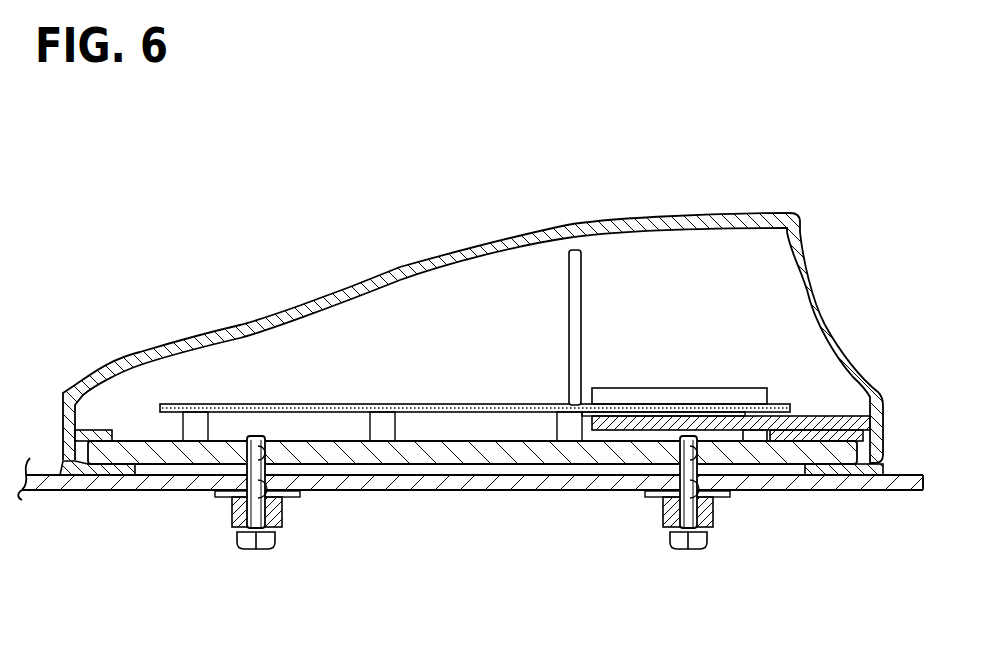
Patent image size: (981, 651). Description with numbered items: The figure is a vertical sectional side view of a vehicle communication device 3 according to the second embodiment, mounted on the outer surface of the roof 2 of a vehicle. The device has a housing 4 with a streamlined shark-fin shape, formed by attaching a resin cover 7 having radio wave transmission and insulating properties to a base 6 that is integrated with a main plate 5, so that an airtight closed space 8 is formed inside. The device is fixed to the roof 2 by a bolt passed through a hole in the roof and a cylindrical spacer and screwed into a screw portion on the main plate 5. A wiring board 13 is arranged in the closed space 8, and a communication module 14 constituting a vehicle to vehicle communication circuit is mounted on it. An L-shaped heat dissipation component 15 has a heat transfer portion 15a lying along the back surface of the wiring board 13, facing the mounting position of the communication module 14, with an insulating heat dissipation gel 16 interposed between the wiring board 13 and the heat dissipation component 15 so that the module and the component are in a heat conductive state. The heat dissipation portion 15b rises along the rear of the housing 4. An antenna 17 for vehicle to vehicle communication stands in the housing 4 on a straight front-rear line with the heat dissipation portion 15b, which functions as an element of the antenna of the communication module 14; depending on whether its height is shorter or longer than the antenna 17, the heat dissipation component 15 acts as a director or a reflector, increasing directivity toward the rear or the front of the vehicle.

The roof 2 is at (840, 492).
The vehicle communication device 3 is at (431, 293).
The housing 4 is at (707, 215).
The main plate 5 is at (462, 492).
The base 6 is at (915, 490).
The cover 7 is at (358, 292).
The closed space 8 is at (488, 320).
The wiring board 13 is at (430, 403).
The communication module 14 is at (688, 388).
The heat dissipation component 15 is at (807, 413).
The heat transfer portion 15a is at (837, 412).
The heat dissipation portion 15b is at (817, 283).
The heat dissipation gel 16 is at (562, 407).
The antenna 17 is at (584, 292).